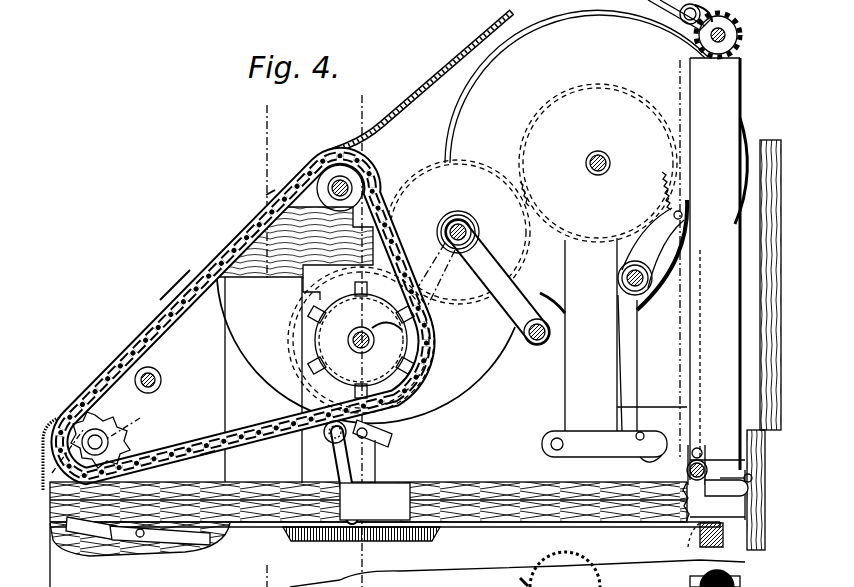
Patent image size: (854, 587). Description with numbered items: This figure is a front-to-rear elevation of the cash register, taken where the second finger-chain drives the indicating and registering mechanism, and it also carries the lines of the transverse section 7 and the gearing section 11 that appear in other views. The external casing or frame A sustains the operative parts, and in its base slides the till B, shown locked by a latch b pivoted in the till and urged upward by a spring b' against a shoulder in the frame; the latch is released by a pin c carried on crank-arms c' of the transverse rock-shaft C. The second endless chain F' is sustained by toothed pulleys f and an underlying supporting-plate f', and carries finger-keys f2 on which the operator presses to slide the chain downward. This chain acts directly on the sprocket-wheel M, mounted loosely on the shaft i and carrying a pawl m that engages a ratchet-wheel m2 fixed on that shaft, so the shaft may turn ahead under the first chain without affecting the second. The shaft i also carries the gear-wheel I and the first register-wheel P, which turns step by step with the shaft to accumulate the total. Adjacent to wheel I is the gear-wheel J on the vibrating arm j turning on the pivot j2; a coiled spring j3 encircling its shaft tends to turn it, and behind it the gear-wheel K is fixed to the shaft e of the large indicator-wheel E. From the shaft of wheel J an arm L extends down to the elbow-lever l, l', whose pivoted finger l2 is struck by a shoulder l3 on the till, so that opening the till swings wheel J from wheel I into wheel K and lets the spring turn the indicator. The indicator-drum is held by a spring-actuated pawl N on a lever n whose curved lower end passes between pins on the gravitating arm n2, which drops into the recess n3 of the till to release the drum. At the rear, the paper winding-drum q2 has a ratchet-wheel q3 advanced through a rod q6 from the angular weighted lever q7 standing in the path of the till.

The section line 7 7 is at (230, 118).
The section line 11 11 is at (361, 333).
The register-wheel P is at (366, 380).
The indicator-wheel E is at (596, 117).
The gear-wheel K is at (598, 163).
The horizontal shaft e is at (603, 170).
The gear-wheel J is at (458, 232).
The vibrating arm j is at (520, 316).
The coiled spring j3 is at (458, 216).
The pivot j2 is at (537, 345).
The endless chain F' is at (242, 316).
The supporting-plate f' is at (177, 306).
The finger-keys f2 is at (270, 200).
The toothed pulleys f is at (217, 302).
The sprocket-wheel M is at (300, 343).
The ratchet-wheel m2 is at (361, 340).
The pawl m is at (385, 317).
The shaft i is at (374, 345).
The gear-wheel I is at (298, 300).
The transverse rock-shaft C is at (162, 380).
The crank-arms c' is at (103, 439).
The pin c is at (36, 454).
The recess n3 is at (438, 532).
The elbow-lever arm l' is at (336, 469).
The pivoted finger l2 is at (375, 501).
The arm L is at (384, 432).
The elbow-lever arm l is at (543, 241).
The till B is at (150, 555).
The spring b' is at (96, 552).
The latch b is at (160, 556).
The winding-drum q2 is at (742, 580).
The external casing or frame A is at (763, 462).
The rod q6 is at (690, 80).
The angular weighted lever q7 is at (750, 490).
The shoulder l3 is at (722, 530).
The ratchet-wheel q3 is at (740, 30).
The spring-actuated pawl N is at (682, 190).
The lever n is at (633, 360).
The gravitating arm n2 is at (604, 446).